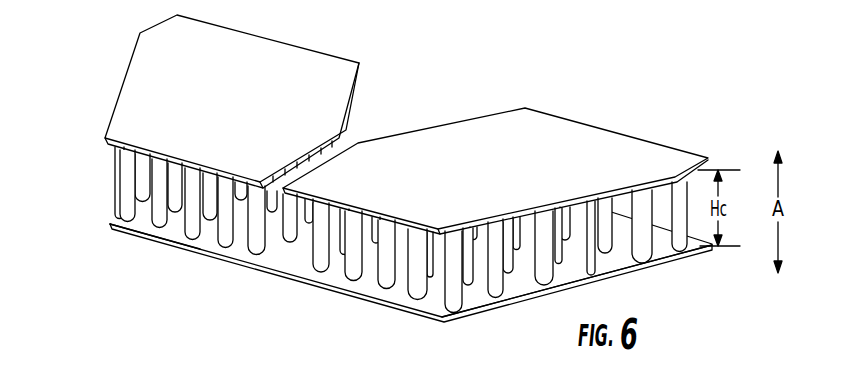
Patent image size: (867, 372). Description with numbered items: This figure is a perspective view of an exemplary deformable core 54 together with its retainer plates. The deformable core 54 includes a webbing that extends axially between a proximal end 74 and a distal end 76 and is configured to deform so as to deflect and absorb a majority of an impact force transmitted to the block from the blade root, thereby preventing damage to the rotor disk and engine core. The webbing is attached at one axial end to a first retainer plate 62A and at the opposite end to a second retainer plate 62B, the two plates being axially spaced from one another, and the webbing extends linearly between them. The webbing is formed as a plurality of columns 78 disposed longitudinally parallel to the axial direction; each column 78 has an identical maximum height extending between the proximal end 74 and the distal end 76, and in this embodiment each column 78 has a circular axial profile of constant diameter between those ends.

The deformable core 54 is at (662, 263).
The first retainer plate 62A is at (590, 137).
The second retainer plate 62B is at (288, 273).
The proximal end 74 is at (110, 225).
The distal end 76 is at (110, 145).
The columns 78 is at (497, 287).